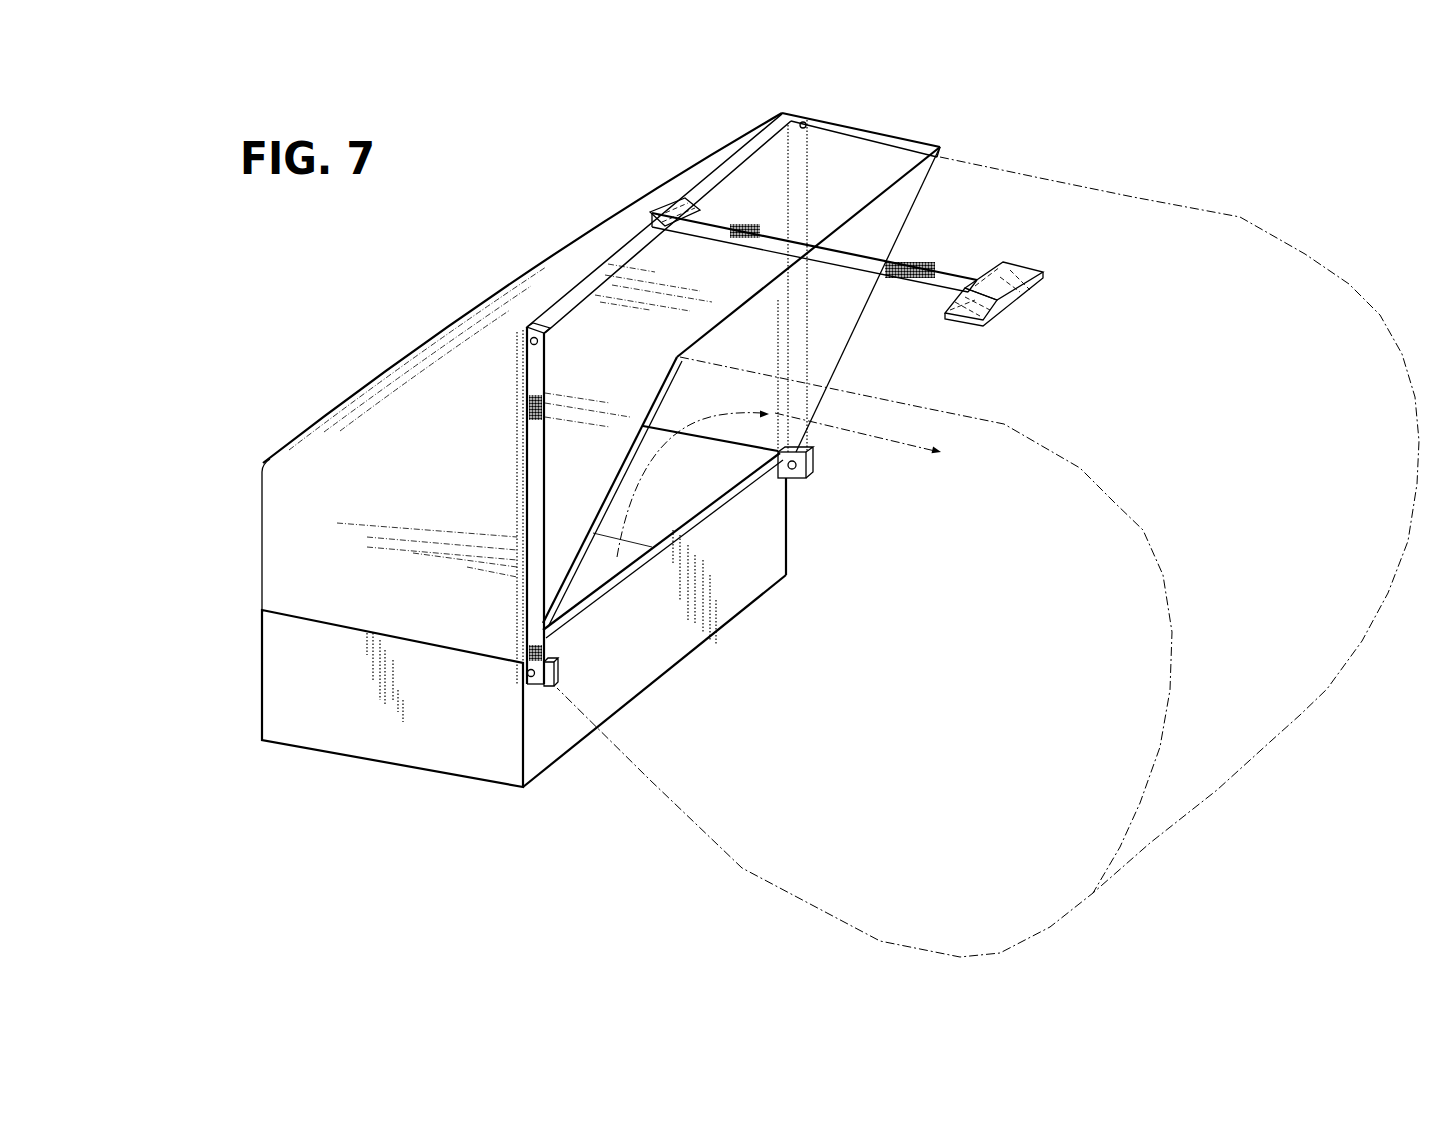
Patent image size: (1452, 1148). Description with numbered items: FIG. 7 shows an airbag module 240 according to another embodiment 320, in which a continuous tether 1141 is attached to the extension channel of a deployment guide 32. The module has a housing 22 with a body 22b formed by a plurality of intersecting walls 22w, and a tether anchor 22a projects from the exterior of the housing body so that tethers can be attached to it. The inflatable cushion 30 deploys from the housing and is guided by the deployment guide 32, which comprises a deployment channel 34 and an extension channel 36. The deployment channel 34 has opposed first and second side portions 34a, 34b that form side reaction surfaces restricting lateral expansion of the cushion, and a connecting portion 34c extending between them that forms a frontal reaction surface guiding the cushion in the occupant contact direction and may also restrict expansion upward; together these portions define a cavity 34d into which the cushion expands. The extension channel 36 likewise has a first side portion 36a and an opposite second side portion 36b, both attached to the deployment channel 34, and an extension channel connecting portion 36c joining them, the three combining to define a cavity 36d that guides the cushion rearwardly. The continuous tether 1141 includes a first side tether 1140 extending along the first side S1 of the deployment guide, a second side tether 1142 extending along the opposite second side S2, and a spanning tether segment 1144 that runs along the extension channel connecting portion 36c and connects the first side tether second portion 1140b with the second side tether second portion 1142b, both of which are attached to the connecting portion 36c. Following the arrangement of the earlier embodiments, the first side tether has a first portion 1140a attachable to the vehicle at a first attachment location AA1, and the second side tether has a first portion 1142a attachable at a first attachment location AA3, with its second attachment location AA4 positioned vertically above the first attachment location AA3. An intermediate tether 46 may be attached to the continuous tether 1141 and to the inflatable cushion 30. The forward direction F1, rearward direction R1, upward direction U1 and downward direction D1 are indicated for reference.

The housing 22 is at (281, 748).
The tether anchor 22a is at (703, 473).
The housing body 22b is at (361, 710).
The intersecting walls 22w is at (543, 755).
The inflatable cushion 30 is at (1145, 218).
The deployment guide 32 is at (550, 203).
The deployment channel 34 is at (621, 214).
The first side portion 34a is at (315, 543).
The second side portion 34b is at (755, 360).
The connecting portion 34c is at (457, 333).
The cavity 34d is at (373, 447).
The extension channel 36 is at (852, 118).
The extension channel first side portion 36a is at (572, 552).
The extension channel second side portion 36b is at (838, 298).
The extension channel connecting portion 36c is at (898, 162).
The cavity 36d is at (793, 558).
The intermediate tether 46 is at (858, 262).
The rolling assembly 240 is at (366, 852).
The airbag module embodiment 320 is at (1418, 159).
The first side tether 1140 is at (523, 413).
The lower hole of post 1140a is at (530, 647).
The first side tether second portion 1140b is at (534, 350).
The continuous tether 1141 is at (580, 283).
The second side tether 1142 is at (812, 193).
The lower end of rotating arm 1142a is at (810, 457).
The second side tether second portion 1142b is at (790, 116).
The spanning tether segment 1144 is at (722, 170).
The first attachment location AA1 is at (523, 682).
The first attachment location AA3 is at (808, 473).
The second attachment location AA4 is at (813, 114).
The first side S1 is at (232, 522).
The second side S2 is at (967, 130).
The forward direction F1 is at (565, 110).
The rearward direction R1 is at (672, 115).
The upward direction U1 is at (188, 240).
The downward direction D1 is at (188, 357).